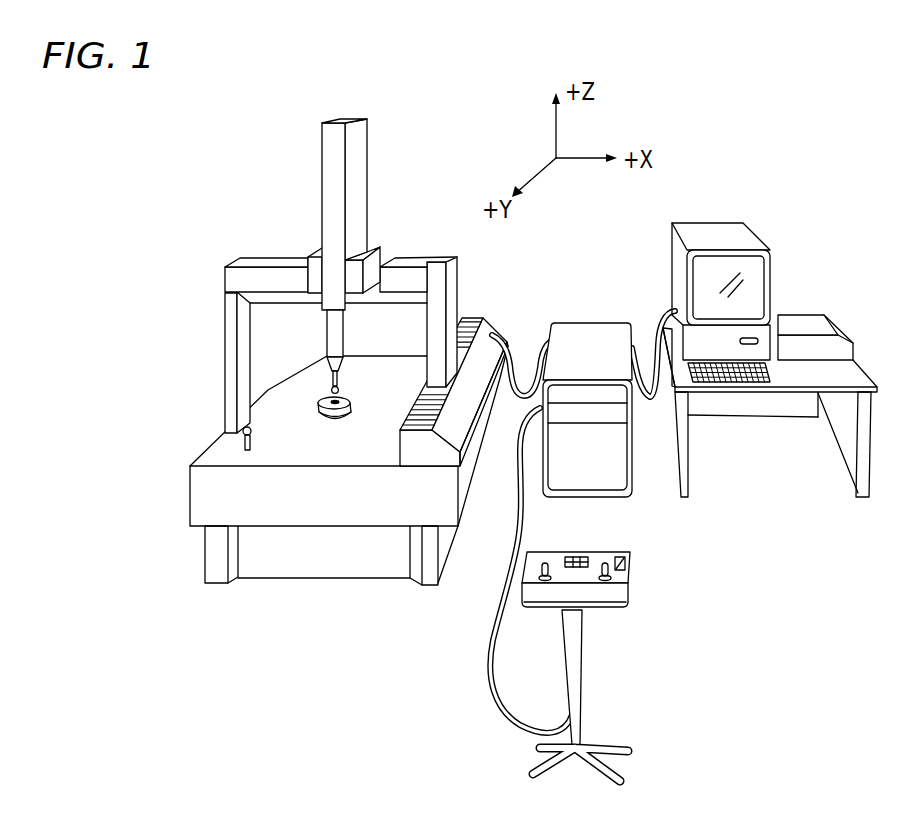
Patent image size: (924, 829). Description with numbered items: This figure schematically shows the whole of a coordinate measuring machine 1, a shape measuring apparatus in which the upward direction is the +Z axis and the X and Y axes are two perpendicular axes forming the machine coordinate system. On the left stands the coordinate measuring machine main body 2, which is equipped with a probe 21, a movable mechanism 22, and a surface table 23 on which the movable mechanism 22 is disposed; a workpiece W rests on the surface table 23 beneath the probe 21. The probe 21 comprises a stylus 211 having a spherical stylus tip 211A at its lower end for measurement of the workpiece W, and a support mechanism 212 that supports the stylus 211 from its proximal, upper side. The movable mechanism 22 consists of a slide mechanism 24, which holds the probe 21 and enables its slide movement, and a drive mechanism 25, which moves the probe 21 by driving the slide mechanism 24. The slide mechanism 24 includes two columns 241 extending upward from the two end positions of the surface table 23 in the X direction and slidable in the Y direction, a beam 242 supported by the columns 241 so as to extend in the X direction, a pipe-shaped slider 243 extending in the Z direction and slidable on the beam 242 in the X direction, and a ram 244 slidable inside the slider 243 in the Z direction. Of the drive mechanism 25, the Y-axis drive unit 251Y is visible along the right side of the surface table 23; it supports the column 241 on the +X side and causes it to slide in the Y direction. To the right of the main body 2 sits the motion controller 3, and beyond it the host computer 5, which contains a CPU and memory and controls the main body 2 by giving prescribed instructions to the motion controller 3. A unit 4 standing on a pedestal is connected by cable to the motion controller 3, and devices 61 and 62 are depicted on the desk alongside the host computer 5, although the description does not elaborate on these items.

The coordinate measuring machine 1 is at (729, 207).
The coordinate measuring machine main body 2 is at (241, 164).
The motion controller 3 is at (585, 320).
The operating unit (joystick) 4 is at (622, 573).
The host computer 5 is at (747, 335).
The probe 21 is at (323, 367).
The movable mechanism 22 is at (233, 232).
The surface table 23 is at (223, 450).
The slide mechanism 24 is at (367, 270).
The drive mechanism 25 is at (487, 374).
The keyboard 61 is at (738, 383).
The printer 62 is at (837, 333).
The stylus 211 is at (325, 521).
The stylus tip 211A is at (340, 393).
The support mechanism 212 is at (347, 372).
The columns 241 is at (440, 283).
The beam 242 is at (397, 278).
The slider 243 is at (362, 148).
The ram 244 is at (347, 340).
The Y-axis drive unit 251Y is at (518, 308).
The workpiece W is at (323, 417).